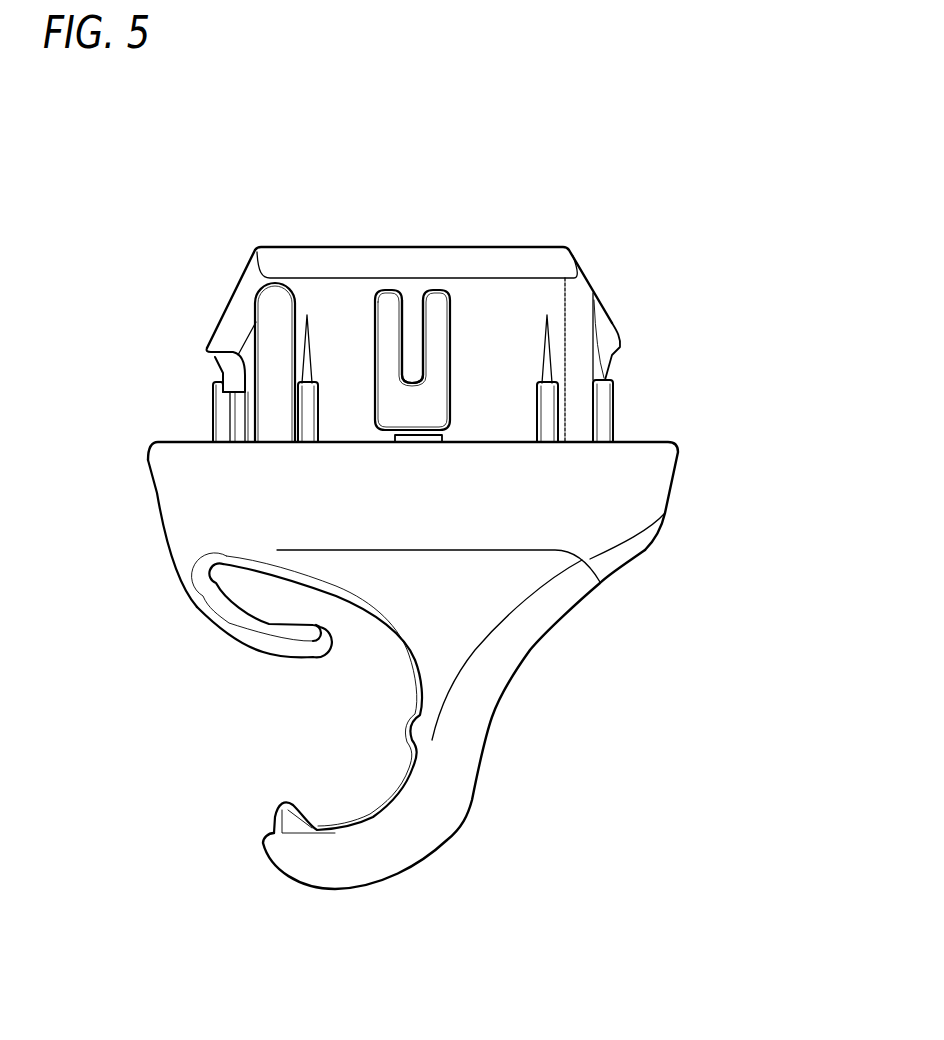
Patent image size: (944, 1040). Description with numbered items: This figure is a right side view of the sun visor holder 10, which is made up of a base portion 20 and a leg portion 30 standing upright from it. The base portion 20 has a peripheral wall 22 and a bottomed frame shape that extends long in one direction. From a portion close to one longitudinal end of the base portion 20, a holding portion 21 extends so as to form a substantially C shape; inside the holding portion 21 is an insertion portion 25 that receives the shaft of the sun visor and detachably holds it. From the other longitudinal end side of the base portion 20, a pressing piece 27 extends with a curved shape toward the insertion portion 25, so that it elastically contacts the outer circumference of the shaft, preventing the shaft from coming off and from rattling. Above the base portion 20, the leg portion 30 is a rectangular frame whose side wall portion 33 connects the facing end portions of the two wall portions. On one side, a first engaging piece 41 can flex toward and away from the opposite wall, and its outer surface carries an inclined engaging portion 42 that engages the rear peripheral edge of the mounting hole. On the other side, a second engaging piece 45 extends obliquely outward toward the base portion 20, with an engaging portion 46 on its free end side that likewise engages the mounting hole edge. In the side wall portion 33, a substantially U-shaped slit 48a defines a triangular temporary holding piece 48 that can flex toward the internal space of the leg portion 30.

The sun visor holder 10 is at (233, 219).
The base portion 20 is at (712, 472).
The holding portion 21 is at (453, 830).
The peripheral wall 22 is at (157, 493).
The insertion portion 25 is at (328, 723).
The pressing piece 27 is at (232, 622).
The leg portion 30 is at (602, 231).
The side wall portion 33 is at (508, 255).
The first engaging piece 41 is at (607, 330).
The engaging portion 42 is at (613, 360).
The second engaging piece 45 is at (230, 308).
The engaging portion 46 is at (223, 373).
The temporary holding piece 48 is at (412, 320).
The slit 48a is at (392, 302).